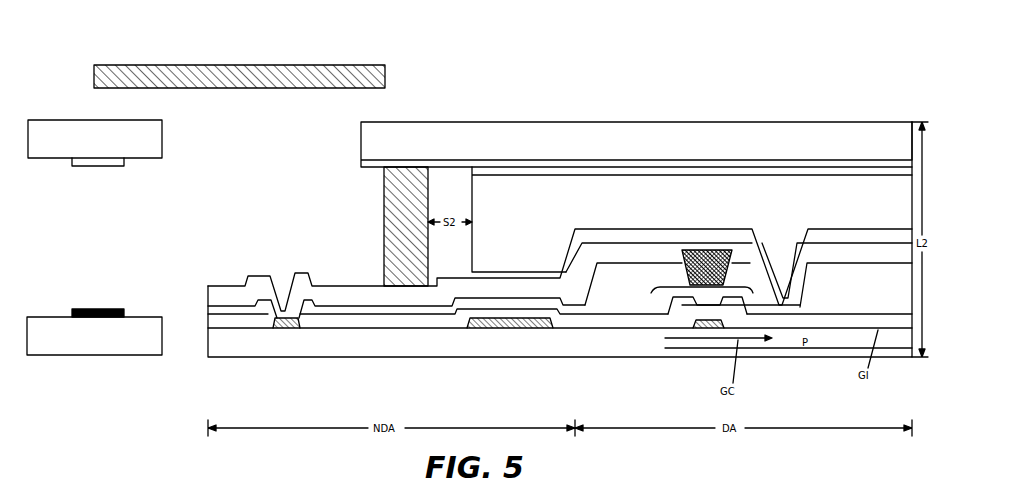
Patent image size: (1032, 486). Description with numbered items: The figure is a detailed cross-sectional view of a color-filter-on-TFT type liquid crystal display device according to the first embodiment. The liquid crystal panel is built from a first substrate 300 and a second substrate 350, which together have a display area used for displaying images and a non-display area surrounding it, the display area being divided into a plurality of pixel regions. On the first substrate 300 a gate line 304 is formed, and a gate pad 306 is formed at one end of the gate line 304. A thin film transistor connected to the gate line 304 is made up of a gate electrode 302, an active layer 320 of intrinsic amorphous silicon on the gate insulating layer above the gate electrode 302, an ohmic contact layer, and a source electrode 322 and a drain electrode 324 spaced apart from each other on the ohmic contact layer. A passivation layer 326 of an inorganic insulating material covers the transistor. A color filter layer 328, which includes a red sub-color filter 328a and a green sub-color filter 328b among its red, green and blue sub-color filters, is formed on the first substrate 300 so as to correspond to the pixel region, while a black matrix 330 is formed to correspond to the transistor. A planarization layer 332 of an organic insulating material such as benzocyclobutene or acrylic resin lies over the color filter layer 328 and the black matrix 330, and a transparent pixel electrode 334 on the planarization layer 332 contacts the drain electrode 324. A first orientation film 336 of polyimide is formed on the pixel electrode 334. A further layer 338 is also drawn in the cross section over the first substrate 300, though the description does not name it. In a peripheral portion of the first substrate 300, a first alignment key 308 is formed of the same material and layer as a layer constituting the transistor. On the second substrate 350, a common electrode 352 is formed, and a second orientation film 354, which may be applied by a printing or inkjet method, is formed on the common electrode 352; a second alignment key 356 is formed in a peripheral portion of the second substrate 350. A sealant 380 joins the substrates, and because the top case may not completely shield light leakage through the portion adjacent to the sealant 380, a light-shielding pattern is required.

The first substrate 300 is at (98, 357).
The gate electrode 302 is at (712, 348).
The gate line 304 is at (502, 329).
The gate pad 306 is at (283, 330).
The first alignment key 308 is at (100, 308).
The active layer 320 is at (690, 330).
The source electrode 322 is at (664, 316).
The drain electrode 324 is at (750, 292).
The passivation layer 326 is at (358, 316).
The color filter layer 328 is at (862, 200).
The red sub-color filter 328a is at (603, 255).
The green sub-color filter 328b is at (750, 240).
The black matrix 330 is at (704, 250).
The planarization layer 332 is at (650, 262).
The pixel electrode 334 is at (802, 240).
The first orientation film 336 is at (894, 228).
The planarization layer 338 is at (303, 273).
The second substrate 350 is at (163, 143).
The common electrode 352 is at (602, 160).
The second orientation film 354 is at (508, 177).
The second alignment key 356 is at (100, 167).
The sealant 380 is at (387, 76).